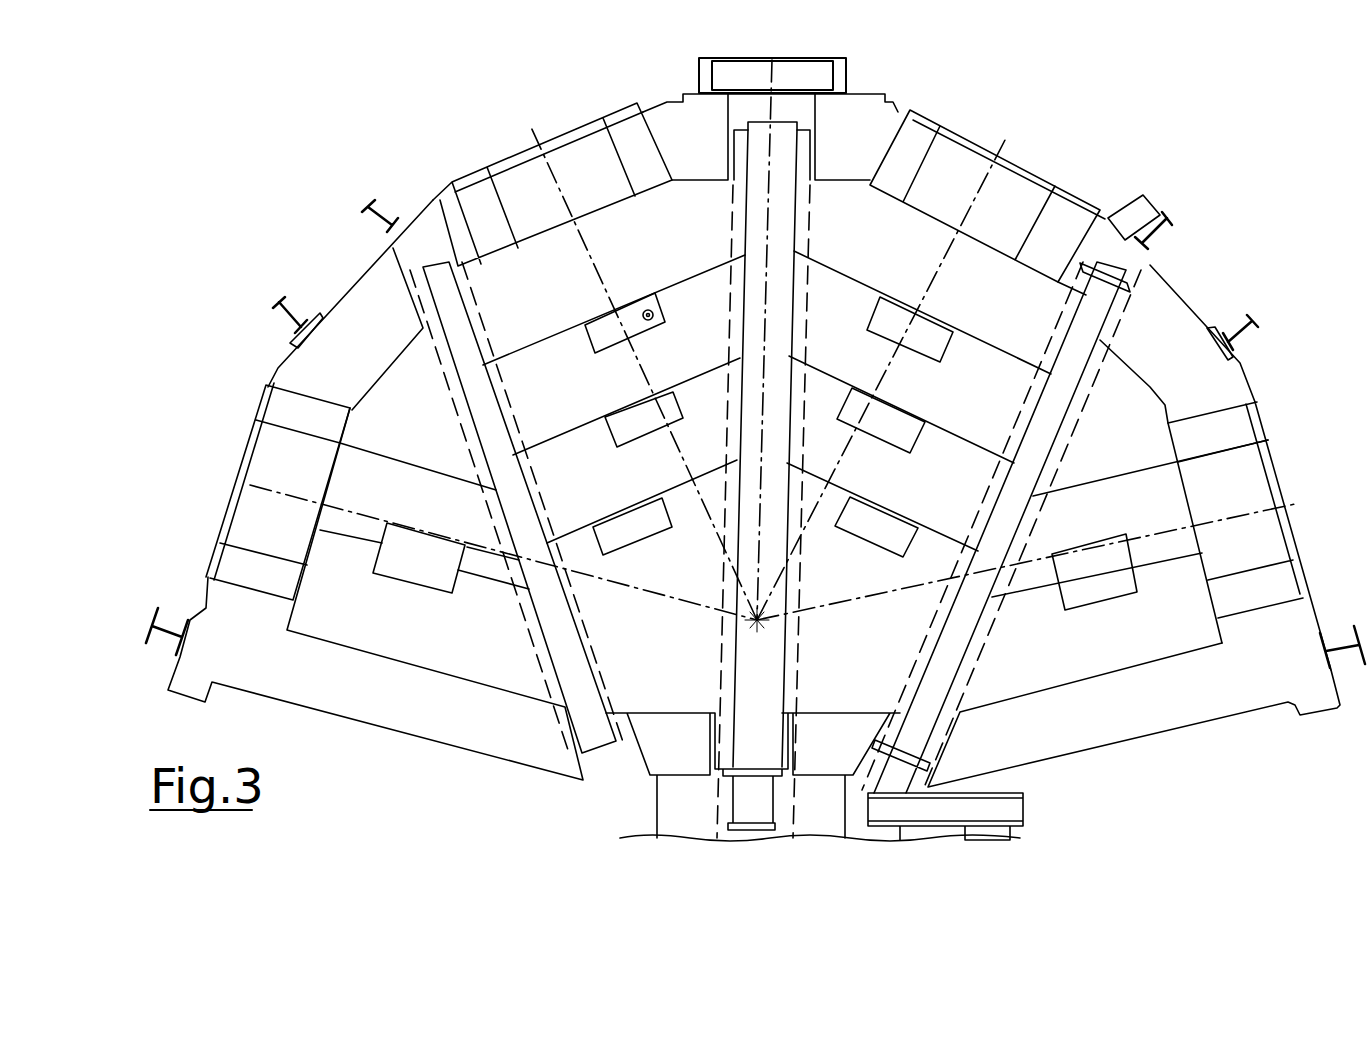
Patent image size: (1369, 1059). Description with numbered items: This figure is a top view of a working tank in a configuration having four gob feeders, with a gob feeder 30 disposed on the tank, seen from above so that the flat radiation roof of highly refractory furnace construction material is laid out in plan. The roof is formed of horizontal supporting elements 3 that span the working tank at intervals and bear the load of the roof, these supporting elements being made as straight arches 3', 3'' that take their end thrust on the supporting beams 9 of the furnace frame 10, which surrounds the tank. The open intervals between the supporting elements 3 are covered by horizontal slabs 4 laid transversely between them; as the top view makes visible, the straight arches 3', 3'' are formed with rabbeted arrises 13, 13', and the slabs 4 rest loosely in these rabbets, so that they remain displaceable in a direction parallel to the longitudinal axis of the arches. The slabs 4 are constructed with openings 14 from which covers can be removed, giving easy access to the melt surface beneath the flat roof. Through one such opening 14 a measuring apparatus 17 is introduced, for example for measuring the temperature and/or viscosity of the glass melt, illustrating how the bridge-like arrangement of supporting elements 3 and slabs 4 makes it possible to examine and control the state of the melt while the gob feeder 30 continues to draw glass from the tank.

The supporting element 3 is at (517, 507).
The straight arch 3' is at (784, 480).
The straight arch 3'' is at (1001, 527).
The slab 4 is at (900, 430).
The supporting beam 9 is at (850, 63).
The furnace frame 10 is at (373, 202).
The rabbeted arris 13 is at (794, 426).
The rabbeted arris 13' is at (797, 360).
The opening 14 is at (602, 330).
The measuring apparatus 17 is at (643, 305).
The gob feeder 30 is at (538, 170).